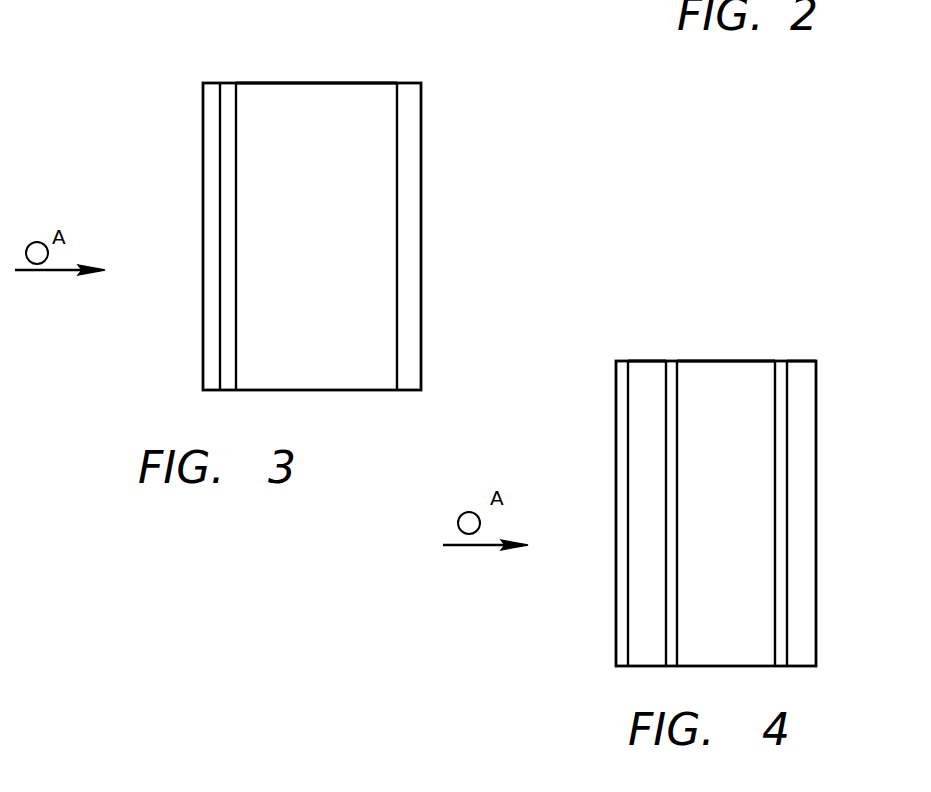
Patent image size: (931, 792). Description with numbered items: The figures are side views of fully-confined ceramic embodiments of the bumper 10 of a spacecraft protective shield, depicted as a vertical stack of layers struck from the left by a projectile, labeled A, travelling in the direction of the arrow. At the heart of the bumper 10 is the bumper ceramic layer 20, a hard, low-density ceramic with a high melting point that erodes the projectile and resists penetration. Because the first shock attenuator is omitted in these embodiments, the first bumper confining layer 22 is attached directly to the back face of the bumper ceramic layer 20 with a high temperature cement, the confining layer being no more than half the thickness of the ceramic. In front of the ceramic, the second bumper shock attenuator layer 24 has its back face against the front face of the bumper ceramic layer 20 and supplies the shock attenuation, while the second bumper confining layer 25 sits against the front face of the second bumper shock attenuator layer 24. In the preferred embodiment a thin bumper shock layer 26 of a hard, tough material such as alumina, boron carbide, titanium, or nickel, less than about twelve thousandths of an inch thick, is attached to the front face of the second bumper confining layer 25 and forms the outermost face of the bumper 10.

In FIG. 3, the bumper 10 is at (343, 390).
In FIG. 4, the bumper 10 is at (693, 667).
In FIG. 3, the bumper ceramic layer 20 is at (338, 107).
In FIG. 4, the bumper ceramic layer 20 is at (720, 377).
In FIG. 3, the first bumper confining layer 22 is at (410, 105).
In FIG. 4, the first bumper confining layer 22 is at (798, 375).
In FIG. 3, the second bumper shock attenuator layer 24 is at (229, 95).
In FIG. 4, the second bumper shock attenuator layer 24 is at (673, 370).
In FIG. 3, the second bumper confining layer 25 is at (212, 92).
In FIG. 4, the second bumper confining layer 25 is at (646, 373).
In FIG. 4, the bumper shock layer 26 is at (619, 388).